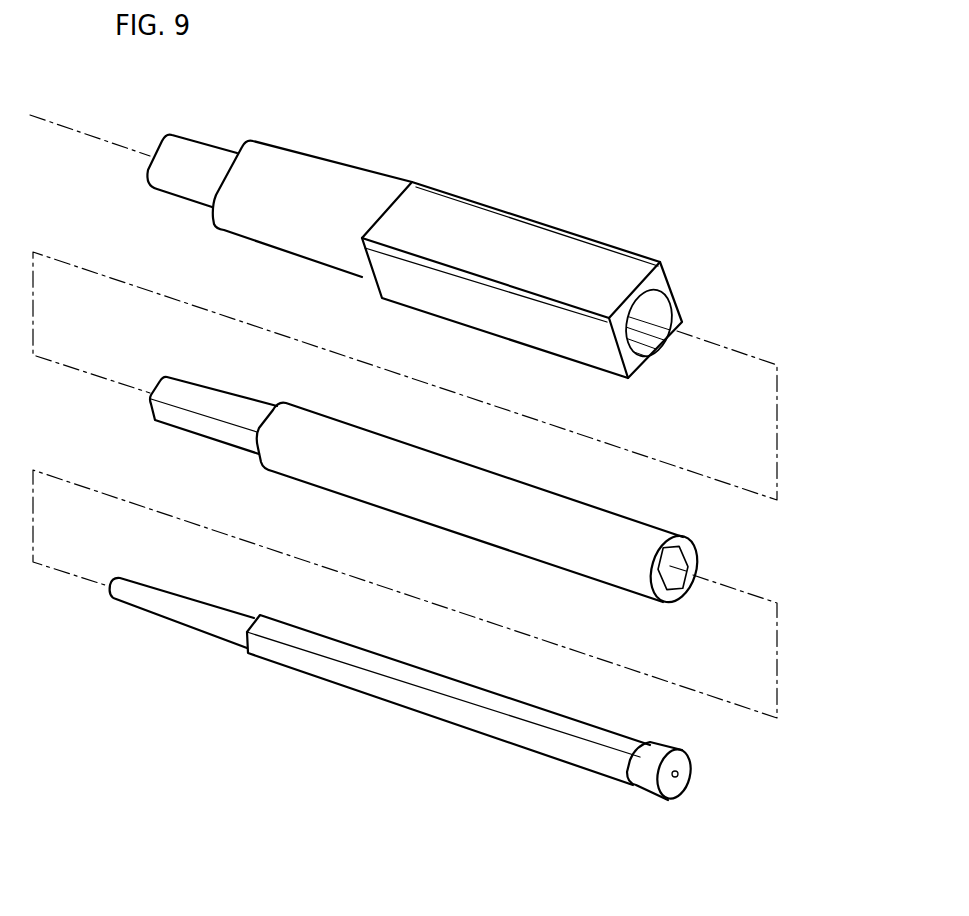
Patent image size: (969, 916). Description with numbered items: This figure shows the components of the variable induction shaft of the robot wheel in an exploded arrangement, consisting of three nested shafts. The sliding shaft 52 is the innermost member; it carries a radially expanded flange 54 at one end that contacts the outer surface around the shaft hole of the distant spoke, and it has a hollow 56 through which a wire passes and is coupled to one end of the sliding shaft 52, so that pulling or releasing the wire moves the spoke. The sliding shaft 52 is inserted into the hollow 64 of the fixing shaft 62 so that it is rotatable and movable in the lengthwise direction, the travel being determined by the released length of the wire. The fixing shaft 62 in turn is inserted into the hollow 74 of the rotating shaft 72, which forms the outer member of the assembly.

The sliding shaft 52 is at (397, 713).
The flange 54 is at (645, 782).
The hollow 56 is at (679, 778).
The fixing shaft 62 is at (248, 469).
The hollow 64 is at (680, 557).
The rotating shaft 72 is at (468, 186).
The hollow 74 is at (652, 310).